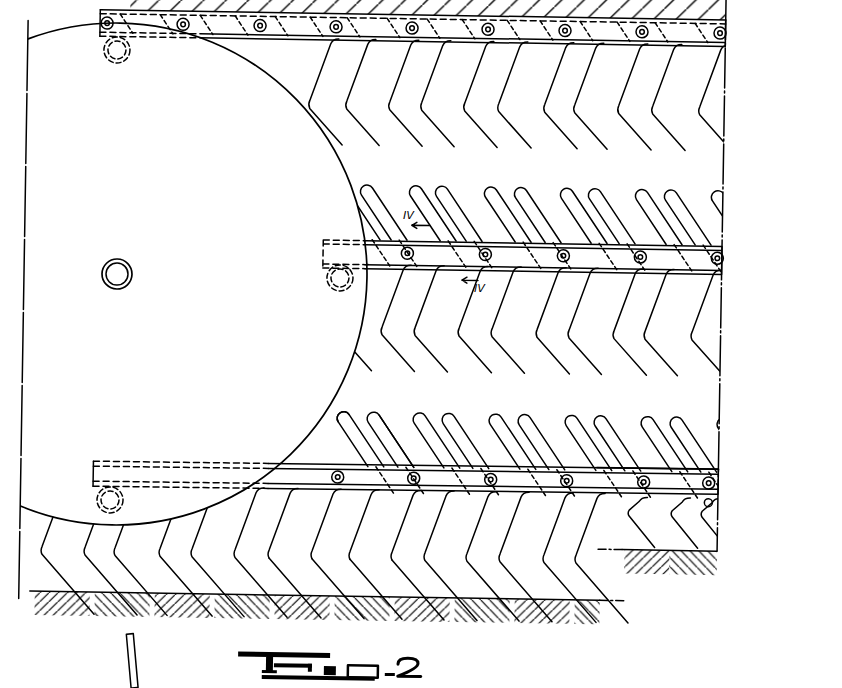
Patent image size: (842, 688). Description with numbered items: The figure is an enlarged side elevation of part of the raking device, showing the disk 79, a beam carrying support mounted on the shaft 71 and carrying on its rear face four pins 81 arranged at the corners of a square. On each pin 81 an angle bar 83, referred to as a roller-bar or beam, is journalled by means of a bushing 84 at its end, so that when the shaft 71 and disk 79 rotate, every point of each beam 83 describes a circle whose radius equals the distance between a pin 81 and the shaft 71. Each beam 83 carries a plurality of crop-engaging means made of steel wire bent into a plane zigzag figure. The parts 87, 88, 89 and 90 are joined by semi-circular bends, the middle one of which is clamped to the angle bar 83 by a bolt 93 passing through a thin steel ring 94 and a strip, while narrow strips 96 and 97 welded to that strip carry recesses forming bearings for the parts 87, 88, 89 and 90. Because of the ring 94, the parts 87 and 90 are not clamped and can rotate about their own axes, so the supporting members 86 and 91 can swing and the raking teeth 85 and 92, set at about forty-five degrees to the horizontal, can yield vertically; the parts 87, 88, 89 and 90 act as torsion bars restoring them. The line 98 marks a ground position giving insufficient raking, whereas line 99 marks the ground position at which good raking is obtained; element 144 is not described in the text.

The disk 79 is at (232, 178).
The shaft 71 is at (132, 274).
The pin 81 is at (124, 52).
The bushing 84 is at (122, 60).
The angle bar 83 is at (722, 22).
The strip 96 is at (713, 455).
The strip 97 is at (716, 493).
The bolt 93 is at (342, 480).
The steel ring 94 is at (417, 480).
The straight part 87 is at (354, 436).
The straight part 88 is at (362, 407).
The straight part 89 is at (391, 406).
The straight part 90 is at (398, 429).
The supporting member 86 is at (277, 550).
The supporting member 91 is at (317, 550).
The raking tooth 85 is at (291, 573).
The raking tooth 92 is at (333, 572).
The ground position 98 is at (251, 592).
The ground position 99 is at (664, 542).
The pin 144 is at (148, 662).